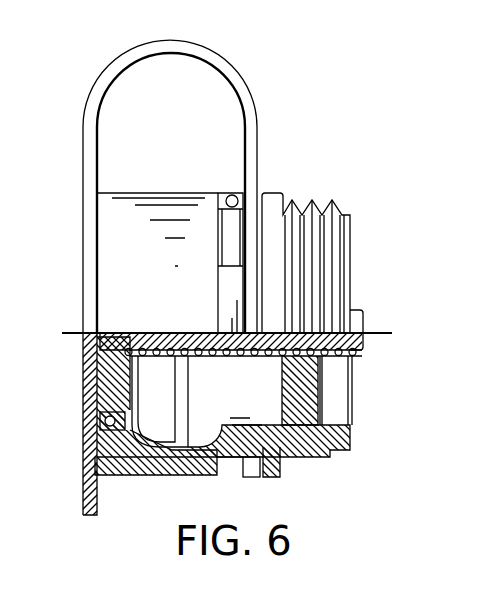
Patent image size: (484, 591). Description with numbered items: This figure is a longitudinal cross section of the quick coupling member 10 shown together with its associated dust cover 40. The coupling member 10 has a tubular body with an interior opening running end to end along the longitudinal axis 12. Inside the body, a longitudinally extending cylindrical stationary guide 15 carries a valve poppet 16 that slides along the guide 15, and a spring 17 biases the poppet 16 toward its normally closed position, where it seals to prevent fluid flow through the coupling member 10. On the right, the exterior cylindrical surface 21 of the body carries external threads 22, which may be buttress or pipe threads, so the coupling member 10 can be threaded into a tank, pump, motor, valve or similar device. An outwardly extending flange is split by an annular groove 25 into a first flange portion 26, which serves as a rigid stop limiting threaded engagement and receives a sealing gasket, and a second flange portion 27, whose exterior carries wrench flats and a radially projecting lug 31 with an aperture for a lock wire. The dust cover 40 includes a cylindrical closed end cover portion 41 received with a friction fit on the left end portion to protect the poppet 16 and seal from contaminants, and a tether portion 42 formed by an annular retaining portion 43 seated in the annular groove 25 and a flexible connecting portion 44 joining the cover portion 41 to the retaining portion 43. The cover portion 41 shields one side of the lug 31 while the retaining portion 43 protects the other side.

The coupling member 10 is at (332, 144).
The longitudinal axis 12 is at (376, 333).
The stationary guide 15 is at (338, 360).
The valve poppet 16 is at (158, 358).
The spring 17 is at (332, 358).
The right exterior cylindrical surface 21 is at (350, 214).
The external threads 22 is at (316, 208).
The annular groove 25 is at (256, 455).
The first flange portion 26 is at (112, 460).
The second flange portion 27 is at (230, 472).
The lug 31 is at (227, 193).
The dust cover 40 is at (85, 397).
The cover portion 41 is at (155, 470).
The tether portion 42 is at (88, 152).
The retaining portion 43 is at (258, 477).
The flexible connecting portion 44 is at (213, 52).